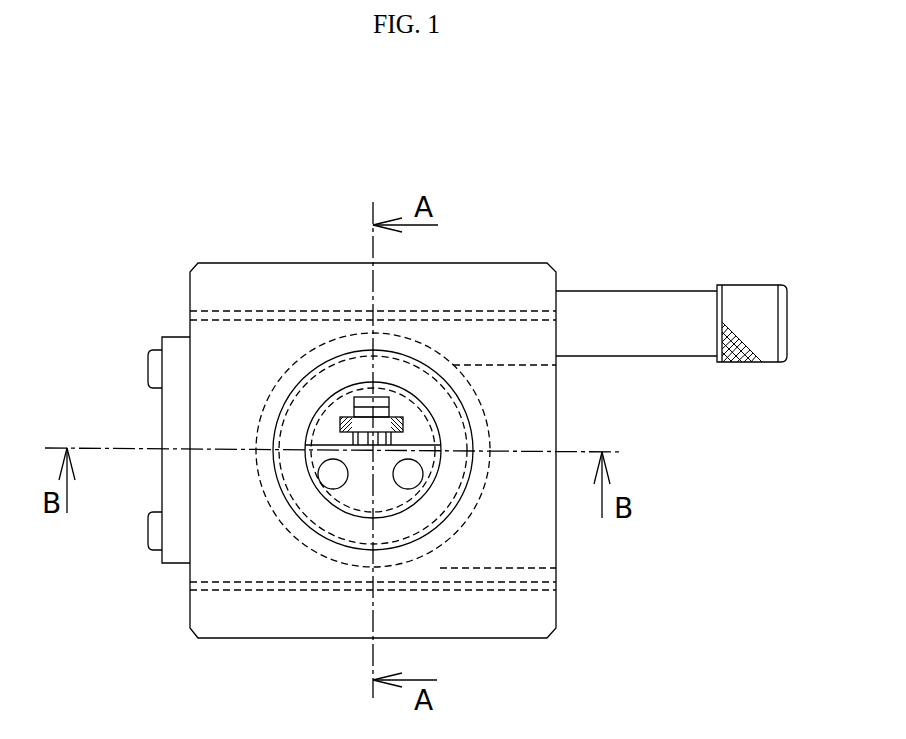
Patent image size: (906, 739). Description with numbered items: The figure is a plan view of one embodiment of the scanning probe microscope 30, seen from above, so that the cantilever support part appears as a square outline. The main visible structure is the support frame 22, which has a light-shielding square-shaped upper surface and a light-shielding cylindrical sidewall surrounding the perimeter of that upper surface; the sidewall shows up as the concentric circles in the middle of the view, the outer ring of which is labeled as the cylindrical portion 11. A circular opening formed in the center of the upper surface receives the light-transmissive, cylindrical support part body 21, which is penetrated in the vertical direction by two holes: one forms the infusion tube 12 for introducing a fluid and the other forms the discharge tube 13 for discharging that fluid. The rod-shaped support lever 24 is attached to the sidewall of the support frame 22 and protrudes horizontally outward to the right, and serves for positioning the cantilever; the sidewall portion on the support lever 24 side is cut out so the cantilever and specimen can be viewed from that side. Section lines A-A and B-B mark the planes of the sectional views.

The scanning probe microscope 30 is at (512, 197).
The support frame 22 is at (273, 288).
The support lever 24 is at (664, 305).
The cylindrical portion 11 is at (462, 483).
The support part body 21 is at (412, 432).
The infusion tube 12 is at (335, 472).
The discharge tube 13 is at (407, 474).